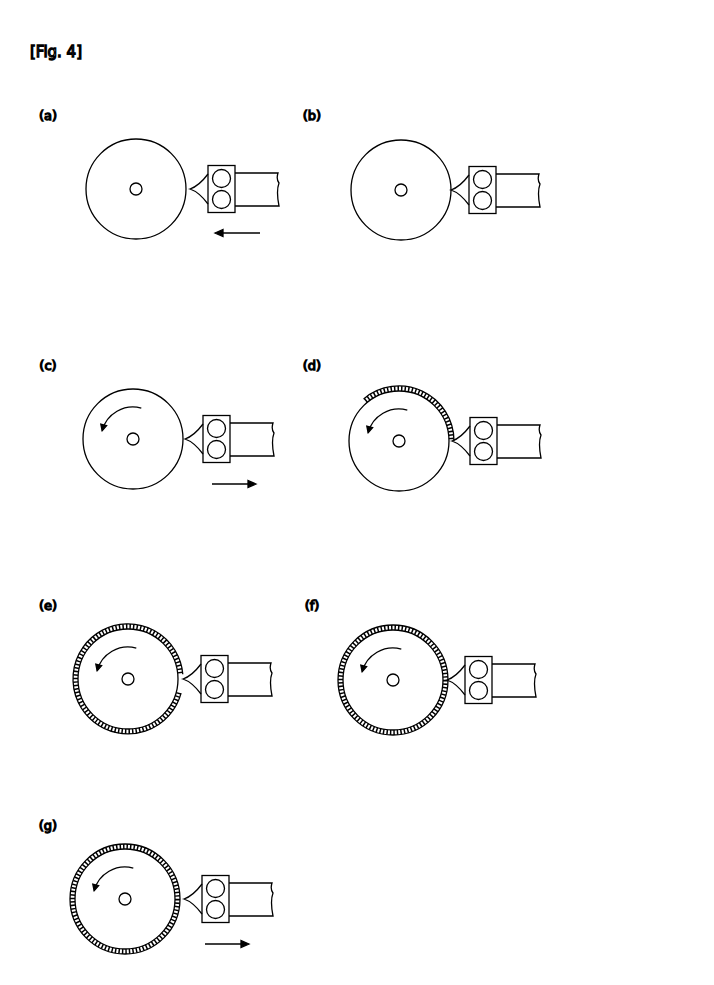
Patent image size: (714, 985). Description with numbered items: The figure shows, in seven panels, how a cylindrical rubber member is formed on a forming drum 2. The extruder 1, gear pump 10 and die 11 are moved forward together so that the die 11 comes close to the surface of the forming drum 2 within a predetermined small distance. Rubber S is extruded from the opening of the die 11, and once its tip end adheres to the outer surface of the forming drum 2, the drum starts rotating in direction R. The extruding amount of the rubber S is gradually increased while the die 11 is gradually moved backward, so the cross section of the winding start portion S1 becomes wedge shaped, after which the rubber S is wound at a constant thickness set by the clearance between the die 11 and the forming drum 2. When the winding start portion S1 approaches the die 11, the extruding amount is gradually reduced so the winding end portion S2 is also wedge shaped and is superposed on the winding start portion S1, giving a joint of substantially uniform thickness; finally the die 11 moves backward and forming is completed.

The extruder 1 is at (268, 173).
The forming drum 2 is at (100, 224).
The gear pump 10 is at (222, 165).
The die 11 is at (203, 179).
The rubber S is at (454, 198).
The winding start portion S1 is at (360, 402).
The winding end portion S2 is at (447, 672).
The direction R is at (254, 647).